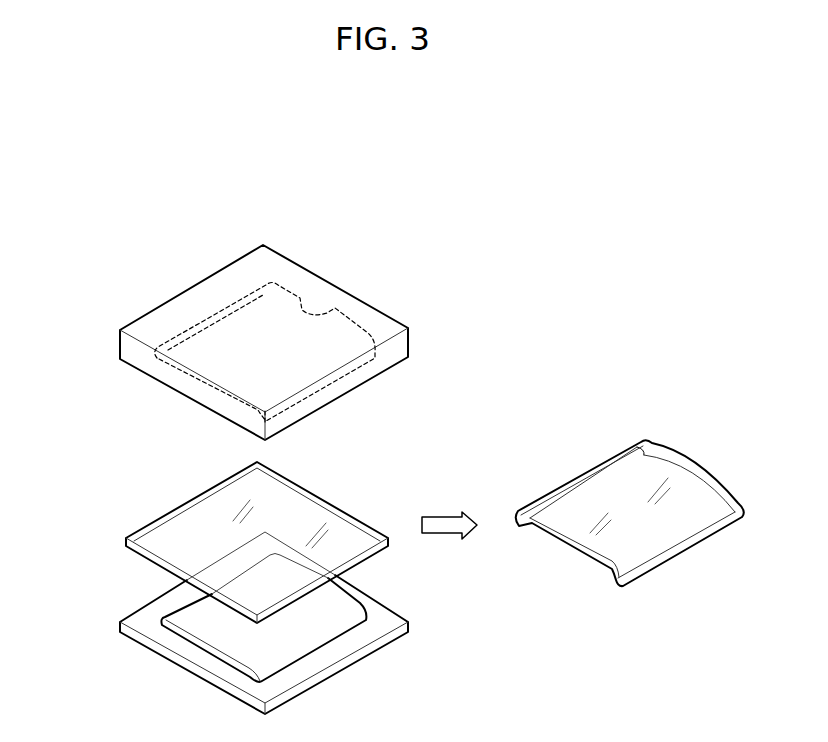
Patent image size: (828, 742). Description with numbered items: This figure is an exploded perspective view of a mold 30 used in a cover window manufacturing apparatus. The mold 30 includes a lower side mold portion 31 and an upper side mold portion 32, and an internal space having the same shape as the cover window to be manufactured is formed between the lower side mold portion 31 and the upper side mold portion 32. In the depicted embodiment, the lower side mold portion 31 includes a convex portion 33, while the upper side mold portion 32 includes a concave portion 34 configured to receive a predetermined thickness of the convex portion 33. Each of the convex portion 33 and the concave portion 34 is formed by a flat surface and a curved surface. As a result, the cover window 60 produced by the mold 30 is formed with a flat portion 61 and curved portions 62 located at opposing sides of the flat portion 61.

The mold 30 is at (66, 427).
The lower side mold portion 31 is at (300, 673).
The upper side mold portion 32 is at (190, 293).
The convex portion 33 is at (233, 660).
The concave portion 34 is at (330, 313).
The cover window 60 is at (645, 431).
The flat portion 61 is at (685, 460).
The curved portions 62 is at (610, 459).